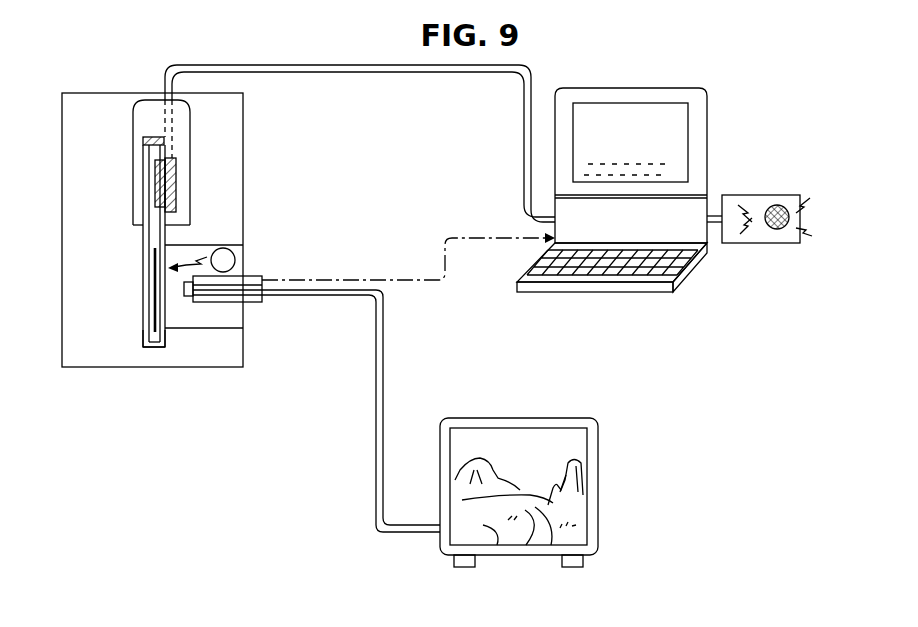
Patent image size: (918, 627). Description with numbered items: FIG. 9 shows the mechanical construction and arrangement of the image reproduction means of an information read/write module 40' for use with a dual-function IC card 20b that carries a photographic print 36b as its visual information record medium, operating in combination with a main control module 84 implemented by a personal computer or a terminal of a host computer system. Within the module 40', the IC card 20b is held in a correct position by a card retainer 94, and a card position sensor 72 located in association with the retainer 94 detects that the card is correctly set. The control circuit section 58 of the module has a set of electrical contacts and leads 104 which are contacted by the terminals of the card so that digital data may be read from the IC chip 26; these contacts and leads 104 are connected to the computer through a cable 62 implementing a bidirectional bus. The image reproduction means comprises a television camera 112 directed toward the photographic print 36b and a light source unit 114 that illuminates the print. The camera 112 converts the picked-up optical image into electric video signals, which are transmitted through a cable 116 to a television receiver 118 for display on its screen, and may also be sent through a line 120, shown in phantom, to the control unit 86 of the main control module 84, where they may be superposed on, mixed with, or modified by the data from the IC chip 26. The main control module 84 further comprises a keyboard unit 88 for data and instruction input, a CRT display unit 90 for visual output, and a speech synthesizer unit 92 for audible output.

The information read/write module 40' is at (184, 230).
The control circuit section 58 is at (190, 125).
The photographic print 36b is at (165, 296).
The dual-function IC card 20b is at (138, 291).
The card retainer 94 is at (141, 338).
The card position sensor 72 is at (148, 137).
The IC chip 26 is at (155, 180).
The electrical contacts and leads 104 is at (176, 178).
The light source unit 114 is at (236, 258).
The television camera 112 is at (255, 303).
The cable 62 is at (355, 74).
The line 120 is at (418, 272).
The cable 116 is at (376, 395).
The main control module 84 is at (640, 217).
The CRT display unit 90 is at (707, 133).
The control unit 86 is at (641, 227).
The keyboard unit 88 is at (598, 293).
The speech synthesizer unit 92 is at (768, 244).
The television receiver 118 is at (531, 417).